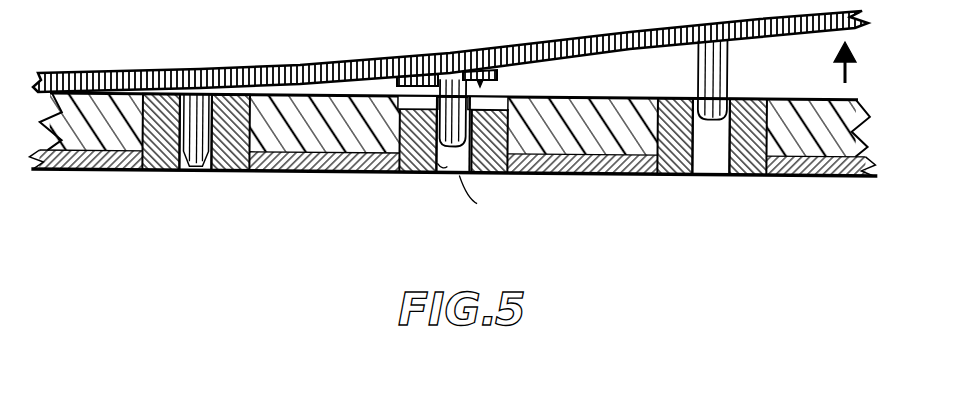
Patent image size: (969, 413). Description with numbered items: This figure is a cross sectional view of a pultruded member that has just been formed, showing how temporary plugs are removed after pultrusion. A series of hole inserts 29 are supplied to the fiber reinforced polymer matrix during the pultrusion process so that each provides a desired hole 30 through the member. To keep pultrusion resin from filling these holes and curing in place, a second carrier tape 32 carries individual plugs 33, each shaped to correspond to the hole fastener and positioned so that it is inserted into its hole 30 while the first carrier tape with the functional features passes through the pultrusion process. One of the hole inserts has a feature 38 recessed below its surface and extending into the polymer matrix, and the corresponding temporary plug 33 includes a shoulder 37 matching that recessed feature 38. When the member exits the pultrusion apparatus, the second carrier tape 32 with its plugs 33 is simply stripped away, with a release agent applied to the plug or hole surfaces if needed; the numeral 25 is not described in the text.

The base plate 25 is at (547, 172).
The hole insert 29 is at (152, 172).
The hole 30 is at (188, 172).
The second carrier tape 32 is at (427, 55).
The plug 33 is at (199, 171).
The shoulder 37 is at (478, 84).
The recessed feature 38 is at (497, 100).